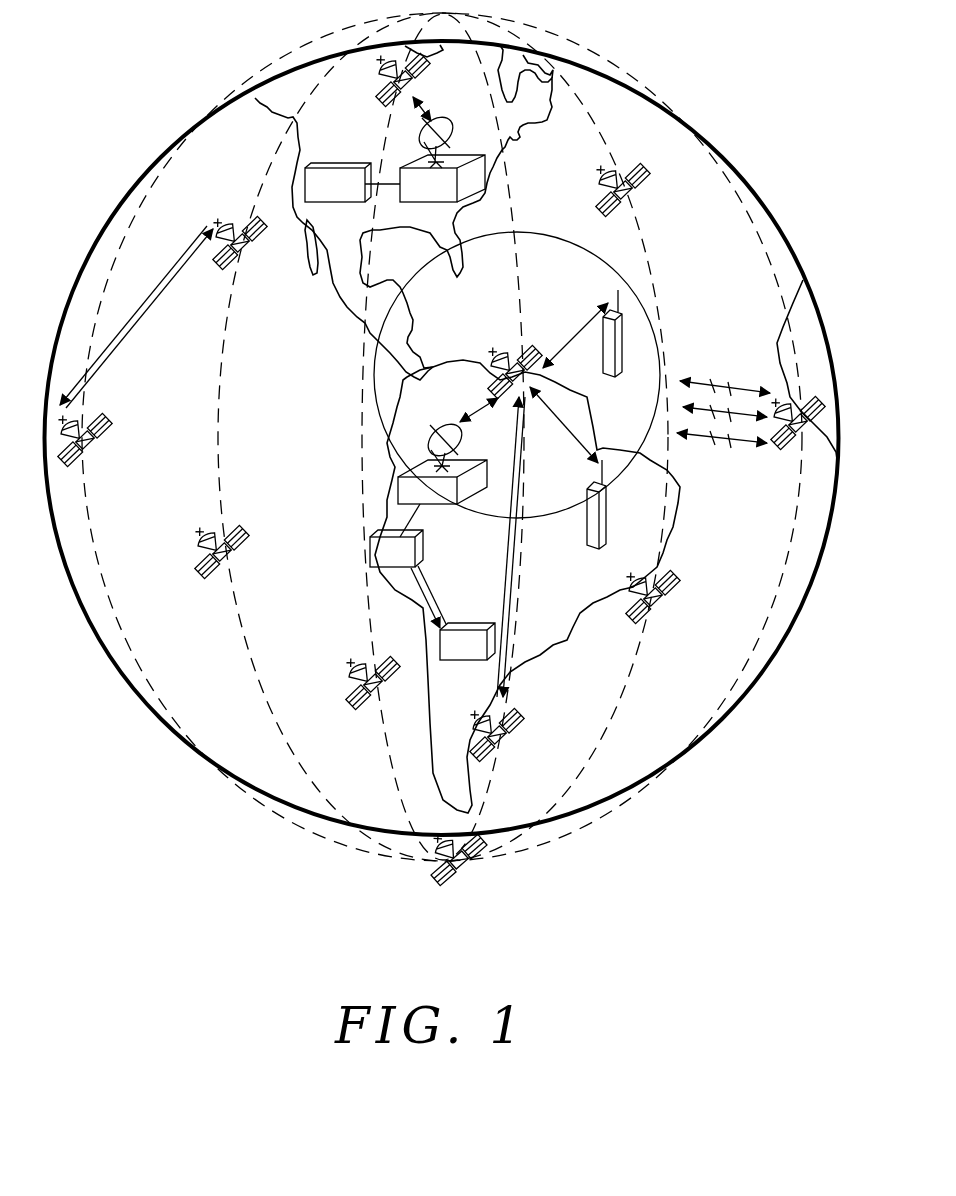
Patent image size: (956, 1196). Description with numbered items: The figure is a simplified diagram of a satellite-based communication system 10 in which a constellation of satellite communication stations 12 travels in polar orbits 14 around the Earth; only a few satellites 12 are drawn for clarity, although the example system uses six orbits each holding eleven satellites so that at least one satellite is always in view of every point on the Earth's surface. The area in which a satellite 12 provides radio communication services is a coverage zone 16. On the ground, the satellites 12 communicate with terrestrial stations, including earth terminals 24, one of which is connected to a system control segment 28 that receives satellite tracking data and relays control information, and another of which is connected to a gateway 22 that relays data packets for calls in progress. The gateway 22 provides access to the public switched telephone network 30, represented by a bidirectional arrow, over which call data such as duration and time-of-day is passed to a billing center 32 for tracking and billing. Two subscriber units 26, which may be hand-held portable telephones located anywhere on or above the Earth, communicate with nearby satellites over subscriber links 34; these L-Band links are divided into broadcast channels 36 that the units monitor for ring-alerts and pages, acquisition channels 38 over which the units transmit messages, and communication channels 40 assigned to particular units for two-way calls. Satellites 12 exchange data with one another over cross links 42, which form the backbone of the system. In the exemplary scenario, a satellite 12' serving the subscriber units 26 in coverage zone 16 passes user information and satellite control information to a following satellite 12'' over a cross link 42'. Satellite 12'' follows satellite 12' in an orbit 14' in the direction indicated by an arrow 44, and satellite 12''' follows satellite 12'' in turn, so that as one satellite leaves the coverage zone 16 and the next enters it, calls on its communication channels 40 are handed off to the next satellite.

The satellite-based communication system 10 is at (712, 118).
The satellite communication station 12 is at (459, 474).
The satellite 12' is at (502, 358).
The satellite 12'' is at (527, 726).
The satellite 12''' is at (476, 856).
The polar orbit 14 is at (442, 437).
The orbit 14' is at (537, 199).
The coverage zone 16 is at (586, 251).
The gateway 22 is at (372, 548).
The earth terminal 24 is at (432, 201).
The subscriber unit 26 is at (620, 367).
The system control segment 28 is at (352, 204).
The public switched telephone network 30 is at (420, 604).
The billing center 32 is at (463, 661).
The subscriber link 34 is at (576, 334).
The broadcast channel 36 is at (700, 380).
The acquisition channel 38 is at (690, 413).
The communication channel 40 is at (740, 442).
The cross link 42 is at (305, 461).
The cross link 42' is at (537, 617).
The arrow 44 is at (520, 768).